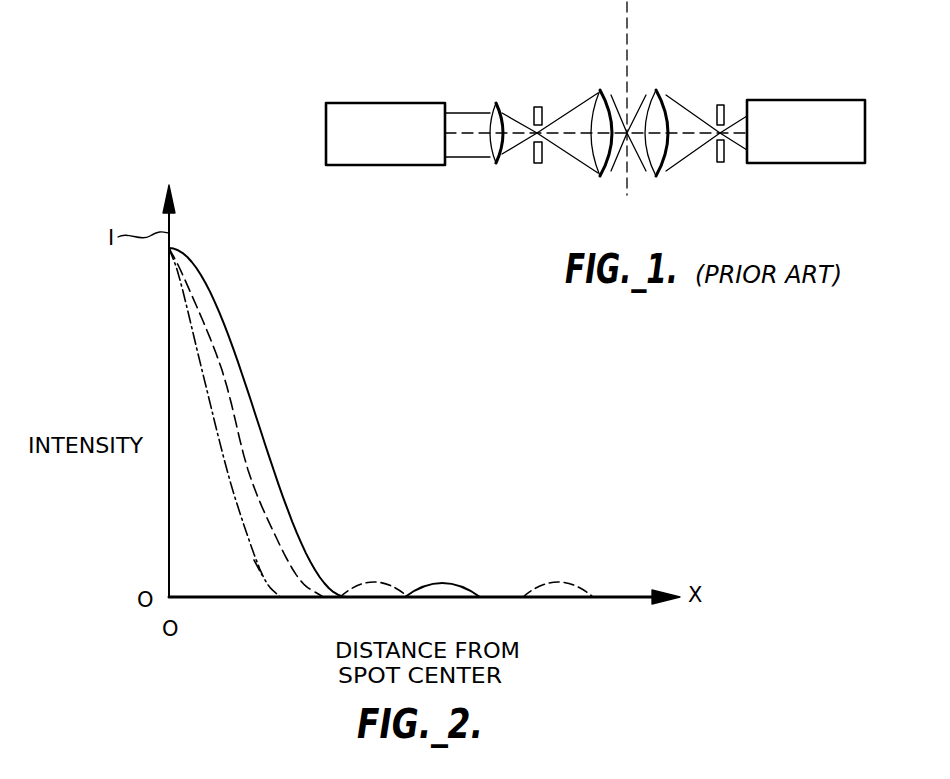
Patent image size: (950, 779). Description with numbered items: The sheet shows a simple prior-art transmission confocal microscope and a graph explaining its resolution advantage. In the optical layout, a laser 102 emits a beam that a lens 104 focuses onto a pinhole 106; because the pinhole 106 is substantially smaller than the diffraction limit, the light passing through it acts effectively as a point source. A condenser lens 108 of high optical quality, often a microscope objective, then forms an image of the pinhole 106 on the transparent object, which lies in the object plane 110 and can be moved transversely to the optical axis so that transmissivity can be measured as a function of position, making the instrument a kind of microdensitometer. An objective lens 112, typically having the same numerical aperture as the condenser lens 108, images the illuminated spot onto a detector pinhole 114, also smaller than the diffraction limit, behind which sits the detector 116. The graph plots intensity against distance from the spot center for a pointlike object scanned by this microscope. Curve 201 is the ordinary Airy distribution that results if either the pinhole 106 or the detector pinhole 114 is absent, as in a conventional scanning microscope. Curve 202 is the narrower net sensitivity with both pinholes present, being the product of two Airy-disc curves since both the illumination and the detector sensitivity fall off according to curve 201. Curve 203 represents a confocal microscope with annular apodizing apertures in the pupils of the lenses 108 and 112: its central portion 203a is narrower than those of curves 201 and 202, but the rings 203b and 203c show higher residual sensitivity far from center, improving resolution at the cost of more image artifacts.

In FIG. 1, the laser 102 is at (380, 103).
In FIG. 1, the lens 104 is at (496, 103).
In FIG. 1, the pinhole 106 is at (538, 107).
In FIG. 1, the condenser lens 108 is at (600, 90).
In FIG. 1, the object plane 110 is at (628, 28).
In FIG. 1, the objective lens 112 is at (656, 90).
In FIG. 1, the detector pinhole 114 is at (719, 105).
In FIG. 1, the detector 116 is at (808, 100).
In FIG. 2, the curve 201 is at (268, 468).
In FIG. 2, the curve 202 is at (229, 407).
In FIG. 2, the curve 203 is at (201, 362).
In FIG. 2, the central portion 203a is at (258, 567).
In FIG. 2, the ring 203b is at (377, 582).
In FIG. 2, the ring 203c is at (558, 582).